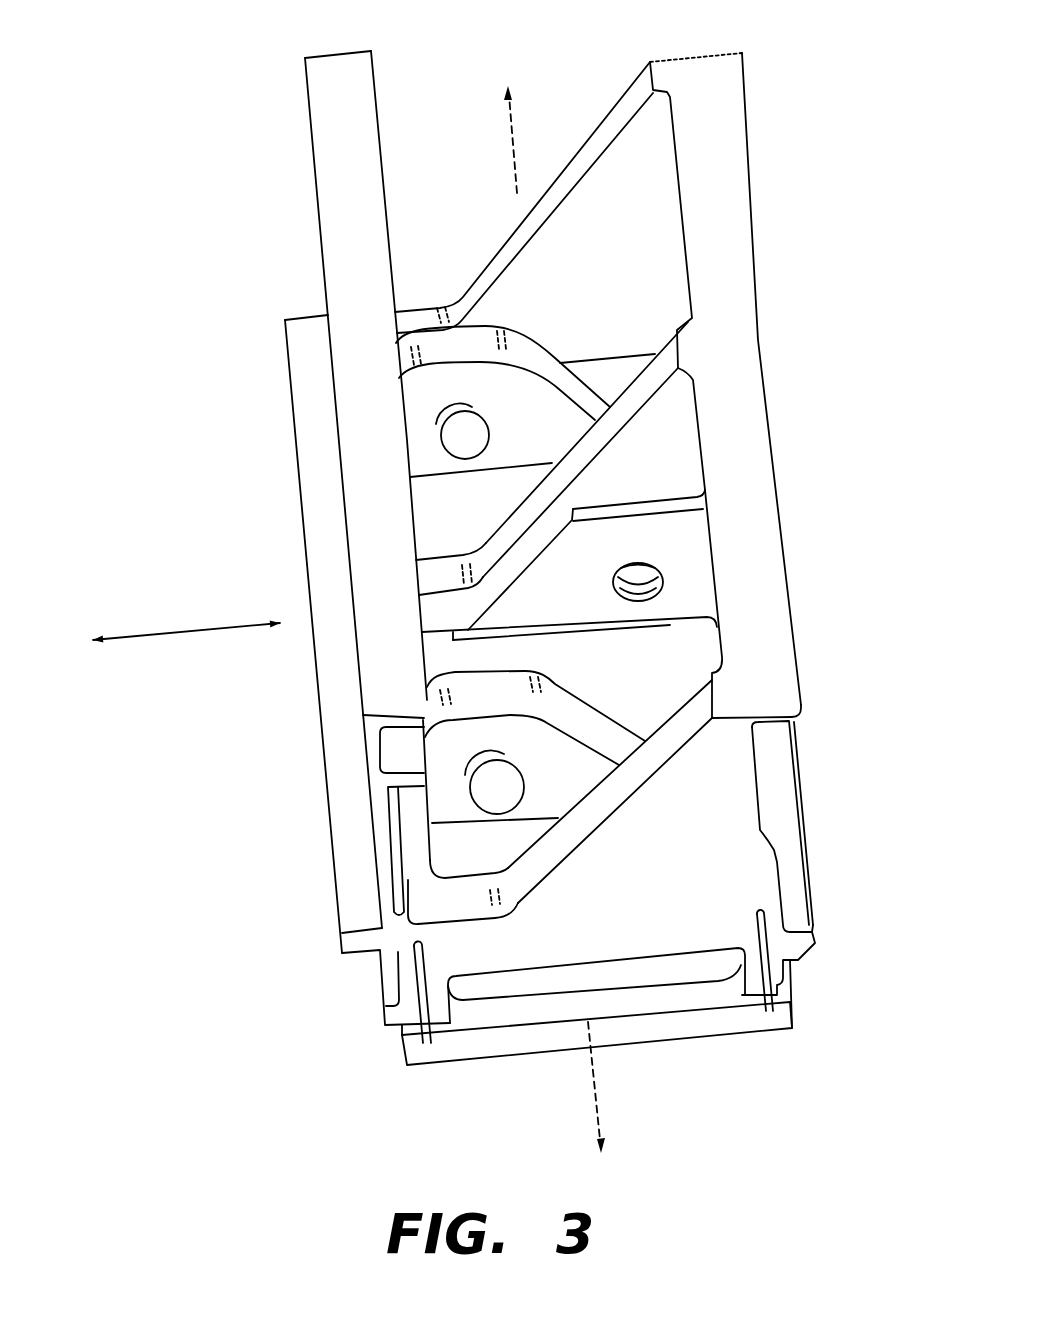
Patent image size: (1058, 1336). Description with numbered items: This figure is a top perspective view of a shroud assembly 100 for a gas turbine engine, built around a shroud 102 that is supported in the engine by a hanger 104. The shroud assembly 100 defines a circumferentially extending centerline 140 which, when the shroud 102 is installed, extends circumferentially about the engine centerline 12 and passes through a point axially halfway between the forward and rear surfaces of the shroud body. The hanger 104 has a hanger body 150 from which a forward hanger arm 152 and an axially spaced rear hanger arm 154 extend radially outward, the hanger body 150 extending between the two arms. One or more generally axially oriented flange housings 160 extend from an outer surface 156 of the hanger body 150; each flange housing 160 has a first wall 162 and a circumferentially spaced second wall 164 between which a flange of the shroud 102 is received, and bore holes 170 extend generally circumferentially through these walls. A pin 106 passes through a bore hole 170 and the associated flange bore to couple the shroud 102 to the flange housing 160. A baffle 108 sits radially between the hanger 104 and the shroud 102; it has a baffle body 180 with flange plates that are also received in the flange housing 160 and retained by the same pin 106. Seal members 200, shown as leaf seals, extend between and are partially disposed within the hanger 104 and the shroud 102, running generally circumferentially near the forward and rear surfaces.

The shroud assembly 100 is at (803, 130).
The shroud 102 is at (750, 1043).
The hanger 104 is at (325, 941).
The pin 106 is at (437, 450).
The baffle 108 is at (672, 990).
The centerline 12 is at (173, 632).
The circumferentially extending centerline 140 is at (513, 150).
The hanger body 150 is at (682, 635).
The forward hanger arm 152 is at (365, 749).
The rear hanger arm 154 is at (777, 683).
The outer surface 156 is at (688, 657).
The flange housing 160 is at (528, 342).
The first wall 162 is at (677, 399).
The second wall 164 is at (665, 340).
The bore hole 170 is at (632, 580).
The baffle body 180 is at (523, 985).
The seal member 200 is at (400, 1030).